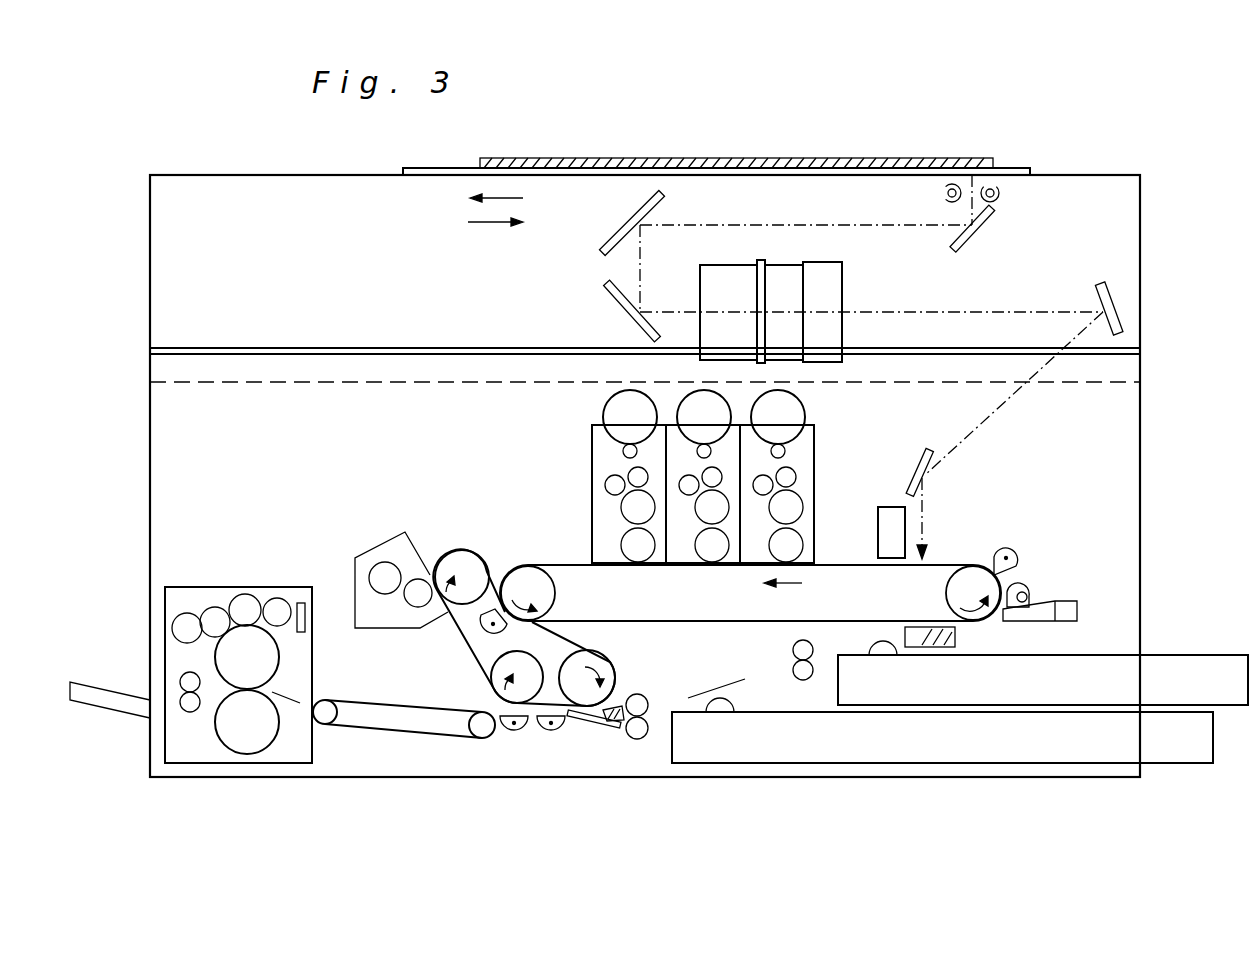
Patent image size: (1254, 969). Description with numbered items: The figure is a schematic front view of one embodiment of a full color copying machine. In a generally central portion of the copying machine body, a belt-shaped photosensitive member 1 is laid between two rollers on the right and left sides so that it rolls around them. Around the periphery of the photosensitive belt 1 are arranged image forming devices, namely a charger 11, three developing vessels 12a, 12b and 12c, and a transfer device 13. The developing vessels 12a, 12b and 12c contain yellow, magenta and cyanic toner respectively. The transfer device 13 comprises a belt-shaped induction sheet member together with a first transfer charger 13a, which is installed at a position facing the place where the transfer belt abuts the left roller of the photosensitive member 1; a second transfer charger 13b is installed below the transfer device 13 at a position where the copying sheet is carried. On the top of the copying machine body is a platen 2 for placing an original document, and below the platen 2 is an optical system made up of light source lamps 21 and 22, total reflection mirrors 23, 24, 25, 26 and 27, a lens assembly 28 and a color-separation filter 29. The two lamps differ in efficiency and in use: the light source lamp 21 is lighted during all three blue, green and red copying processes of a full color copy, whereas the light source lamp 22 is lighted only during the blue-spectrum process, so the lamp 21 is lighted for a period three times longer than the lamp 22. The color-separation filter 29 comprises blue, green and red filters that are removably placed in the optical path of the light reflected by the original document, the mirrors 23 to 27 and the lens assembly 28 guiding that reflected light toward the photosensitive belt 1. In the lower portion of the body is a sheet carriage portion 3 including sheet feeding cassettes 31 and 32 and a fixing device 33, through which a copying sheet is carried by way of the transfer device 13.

The photosensitive member 1 is at (935, 565).
The platen 2 is at (437, 178).
The sheet carriage portion 3 is at (444, 748).
The charger 11 is at (1010, 548).
The developing vessel 12a is at (813, 450).
The developing vessel 12b is at (669, 424).
The developing vessel 12c is at (592, 458).
The transfer device 13 is at (477, 553).
The first transfer charger 13a is at (480, 626).
The second transfer charger 13b is at (553, 735).
The light source lamp 21 is at (1002, 195).
The light source lamp 22 is at (945, 195).
The total reflection mirror 23 is at (953, 248).
The total reflection mirror 24 is at (612, 240).
The total reflection mirror 25 is at (608, 300).
The total reflection mirror 26 is at (1097, 292).
The total reflection mirror 27 is at (912, 470).
The lens assembly 28 is at (727, 265).
The color-separation filter 29 is at (817, 262).
The sheet feeding cassette 31 is at (1210, 655).
The sheet feeding cassette 32 is at (1213, 763).
The fixing device 33 is at (258, 587).